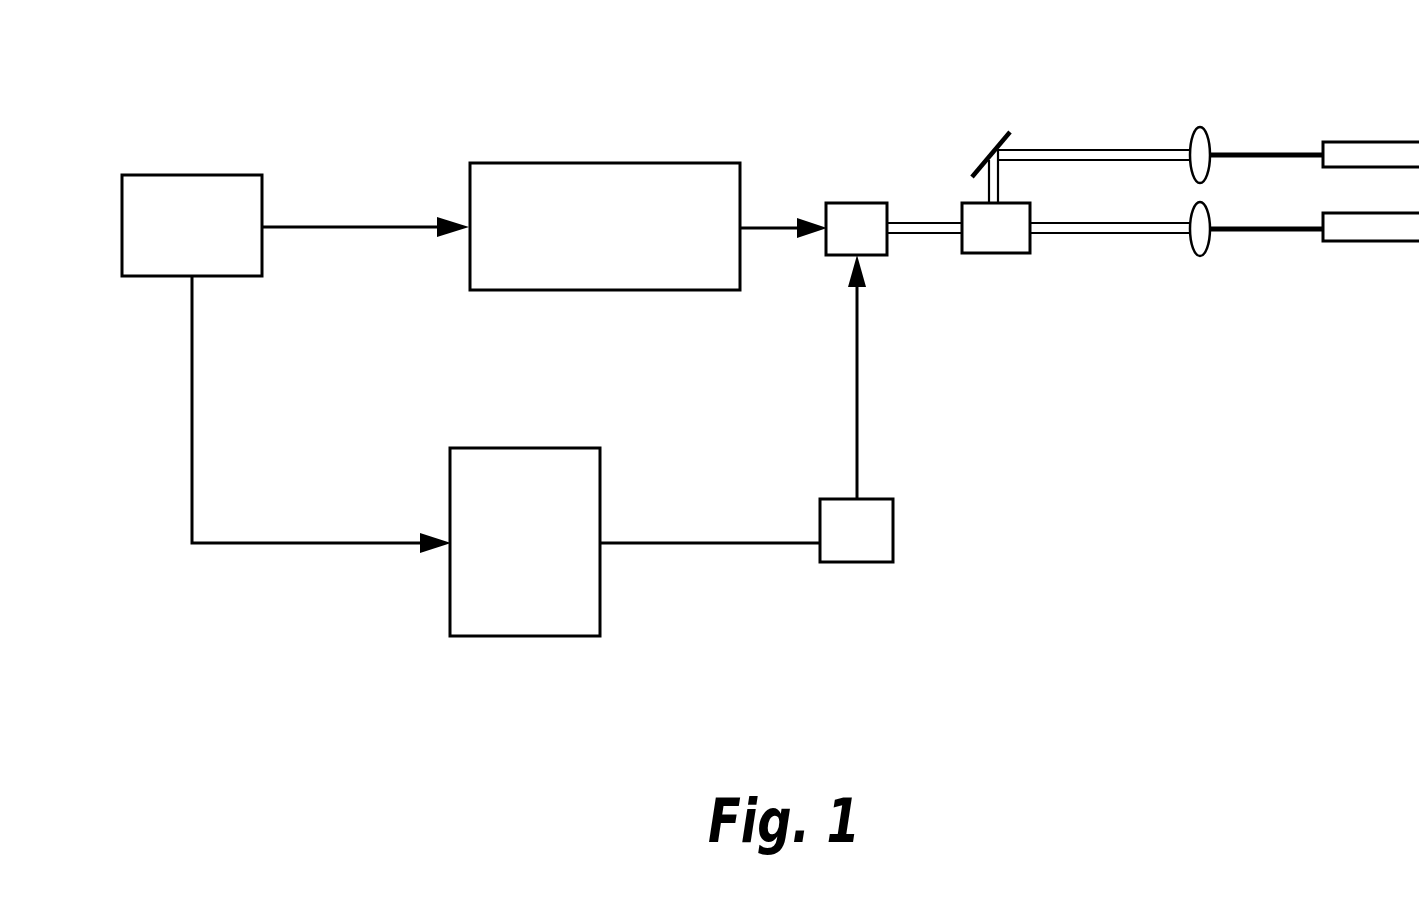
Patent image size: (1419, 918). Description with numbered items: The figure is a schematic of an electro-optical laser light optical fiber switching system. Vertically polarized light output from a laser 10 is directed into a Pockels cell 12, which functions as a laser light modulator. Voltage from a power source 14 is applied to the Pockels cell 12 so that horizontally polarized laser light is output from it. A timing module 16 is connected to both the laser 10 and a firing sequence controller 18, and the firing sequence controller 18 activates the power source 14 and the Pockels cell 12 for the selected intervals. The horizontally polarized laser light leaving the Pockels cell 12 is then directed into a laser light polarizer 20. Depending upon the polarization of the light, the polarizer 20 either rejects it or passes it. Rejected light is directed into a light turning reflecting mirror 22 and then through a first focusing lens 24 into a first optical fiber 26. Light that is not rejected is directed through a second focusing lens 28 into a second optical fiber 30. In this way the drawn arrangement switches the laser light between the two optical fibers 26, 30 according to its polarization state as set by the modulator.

The laser 10 is at (626, 238).
The Pockels cell 12 is at (875, 243).
The power source 14 is at (821, 499).
The timing module 16 is at (213, 243).
The firing sequence controller 18 is at (495, 554).
The laser light polarizer 20 is at (1000, 252).
The light turning reflecting mirror 22 is at (984, 158).
The first focusing lens 24 is at (1198, 127).
The first optical fiber 26 is at (1371, 142).
The second focusing lens 28 is at (1207, 249).
The second optical fiber 30 is at (1353, 241).